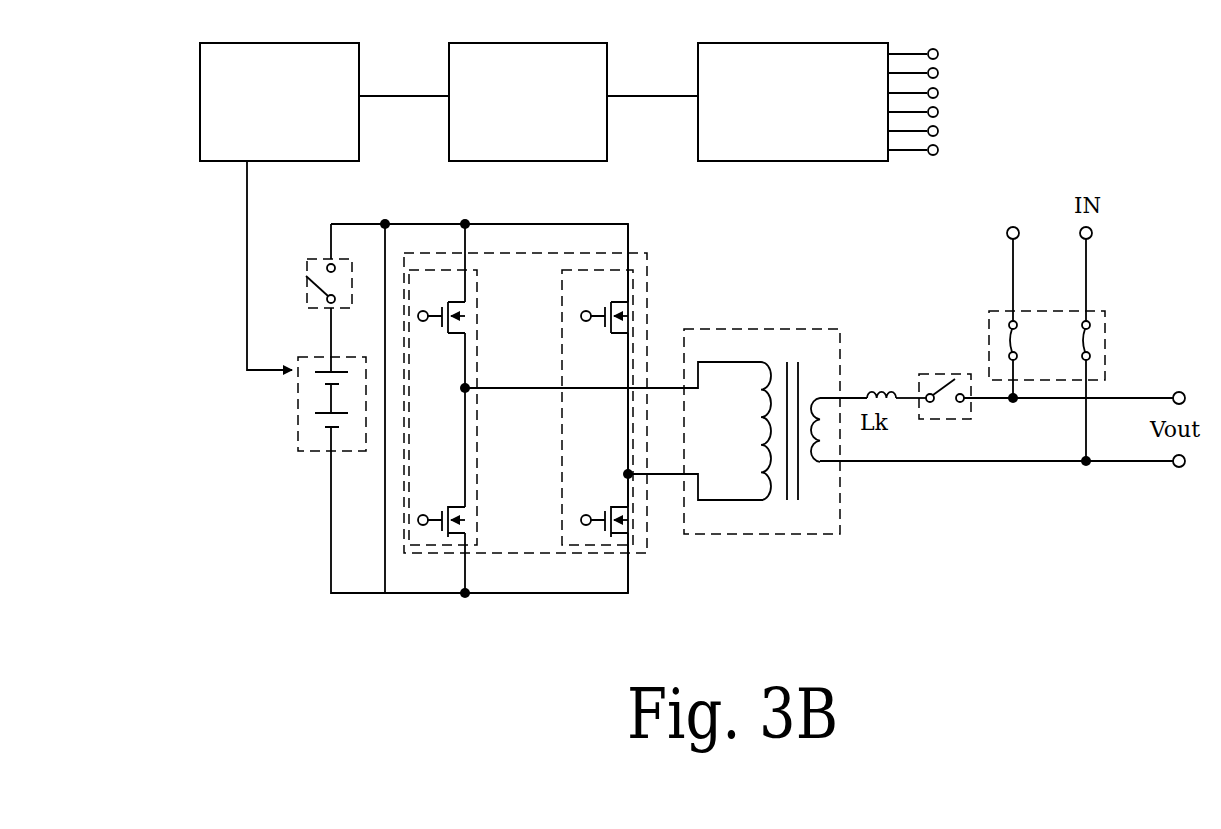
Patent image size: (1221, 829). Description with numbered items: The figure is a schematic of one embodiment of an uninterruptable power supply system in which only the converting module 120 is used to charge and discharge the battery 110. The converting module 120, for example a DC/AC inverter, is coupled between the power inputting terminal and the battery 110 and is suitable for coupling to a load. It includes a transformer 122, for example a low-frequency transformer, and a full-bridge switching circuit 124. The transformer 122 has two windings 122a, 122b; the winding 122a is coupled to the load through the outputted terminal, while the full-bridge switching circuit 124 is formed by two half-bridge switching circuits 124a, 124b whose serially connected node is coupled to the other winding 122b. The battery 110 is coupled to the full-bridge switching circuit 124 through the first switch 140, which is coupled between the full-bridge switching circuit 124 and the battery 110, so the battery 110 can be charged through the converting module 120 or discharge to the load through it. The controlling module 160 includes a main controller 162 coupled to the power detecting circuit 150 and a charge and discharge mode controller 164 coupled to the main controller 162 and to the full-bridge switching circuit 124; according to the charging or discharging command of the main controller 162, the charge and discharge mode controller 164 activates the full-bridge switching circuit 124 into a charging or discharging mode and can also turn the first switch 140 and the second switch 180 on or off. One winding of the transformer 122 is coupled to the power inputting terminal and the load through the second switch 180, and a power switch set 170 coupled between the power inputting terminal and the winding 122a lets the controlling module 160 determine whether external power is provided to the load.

The battery 110 is at (289, 445).
The converting module 120 is at (1153, 28).
The transformer 122 is at (827, 406).
The winding 122a is at (838, 456).
The winding 122b is at (765, 495).
The full-bridge switching circuit 124 is at (521, 446).
The half-bridge switching circuit 124a is at (423, 547).
The half-bridge switching circuit 124b is at (578, 546).
The first switch 140 is at (308, 270).
The power detecting circuit 150 is at (360, 72).
The controlling module 160 is at (1153, 116).
The main controller 162 is at (608, 72).
The charge and discharge mode controller 164 is at (795, 162).
The power switch set 170 is at (1106, 346).
The second switch 180 is at (933, 372).